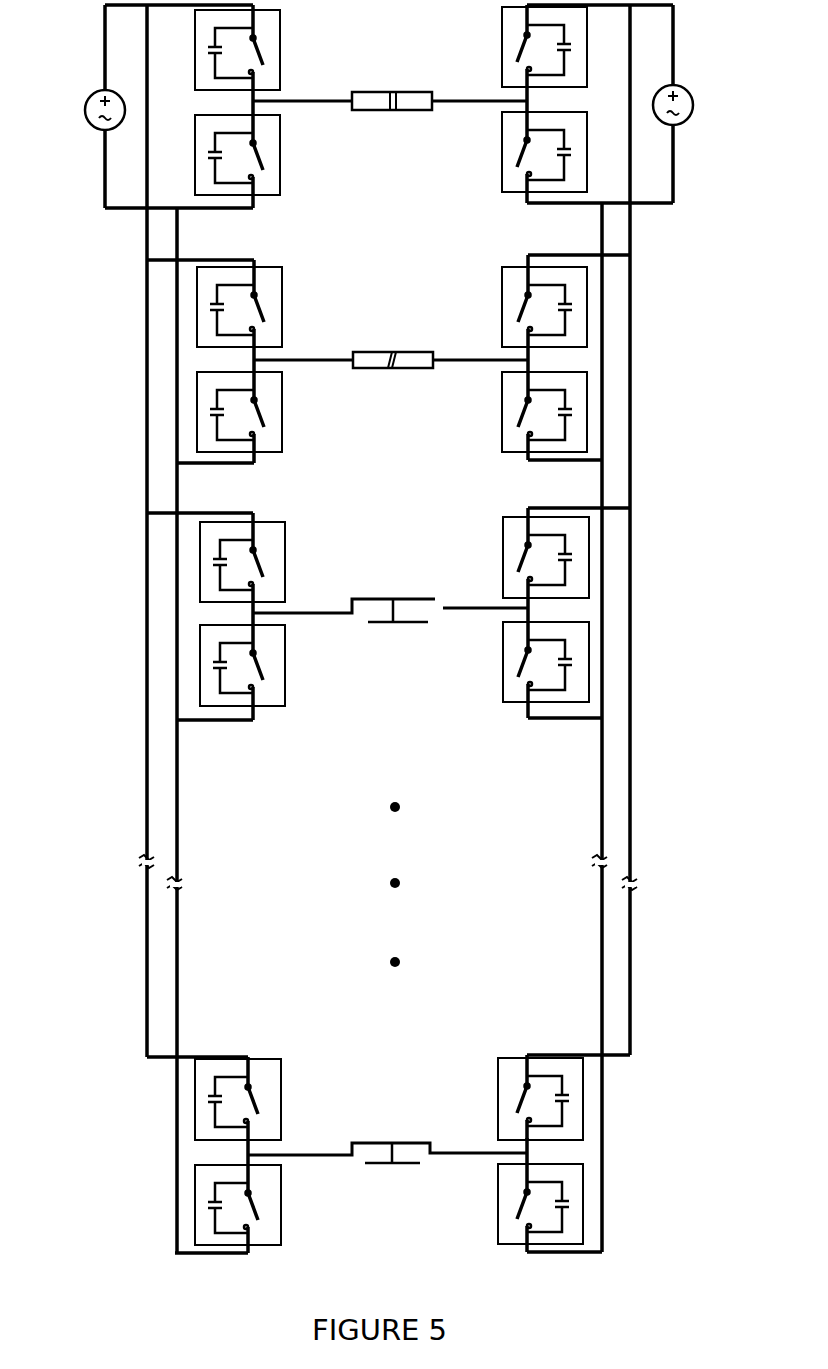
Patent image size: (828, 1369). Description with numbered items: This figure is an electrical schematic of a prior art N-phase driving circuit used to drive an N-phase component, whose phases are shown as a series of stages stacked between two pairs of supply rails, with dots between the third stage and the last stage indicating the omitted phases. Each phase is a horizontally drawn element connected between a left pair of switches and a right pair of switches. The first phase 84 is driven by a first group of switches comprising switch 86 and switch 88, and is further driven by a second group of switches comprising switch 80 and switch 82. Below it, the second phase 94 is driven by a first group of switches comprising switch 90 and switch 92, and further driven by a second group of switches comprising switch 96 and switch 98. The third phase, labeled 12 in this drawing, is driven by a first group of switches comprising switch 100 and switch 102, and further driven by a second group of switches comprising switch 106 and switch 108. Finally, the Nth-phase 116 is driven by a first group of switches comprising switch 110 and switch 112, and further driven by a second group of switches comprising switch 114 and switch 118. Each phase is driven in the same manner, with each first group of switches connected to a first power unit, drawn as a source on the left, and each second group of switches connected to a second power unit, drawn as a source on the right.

The switch 80 is at (500, 50).
The switch 82 is at (500, 145).
The first phase 84 is at (390, 92).
The switch 86 is at (282, 55).
The switch 88 is at (282, 150).
The switch 90 is at (285, 305).
The switch 92 is at (285, 400).
The second phase 94 is at (390, 352).
The switch 96 is at (500, 305).
The switch 98 is at (500, 400).
The switch 100 is at (287, 562).
The switch 102 is at (287, 655).
The load 12 is at (397, 599).
The switch 106 is at (505, 558).
The switch 108 is at (505, 653).
The switch 110 is at (283, 1100).
The switch 112 is at (283, 1195).
The switch 114 is at (498, 1102).
The Nth-phase 116 is at (390, 1143).
The switch 118 is at (498, 1195).